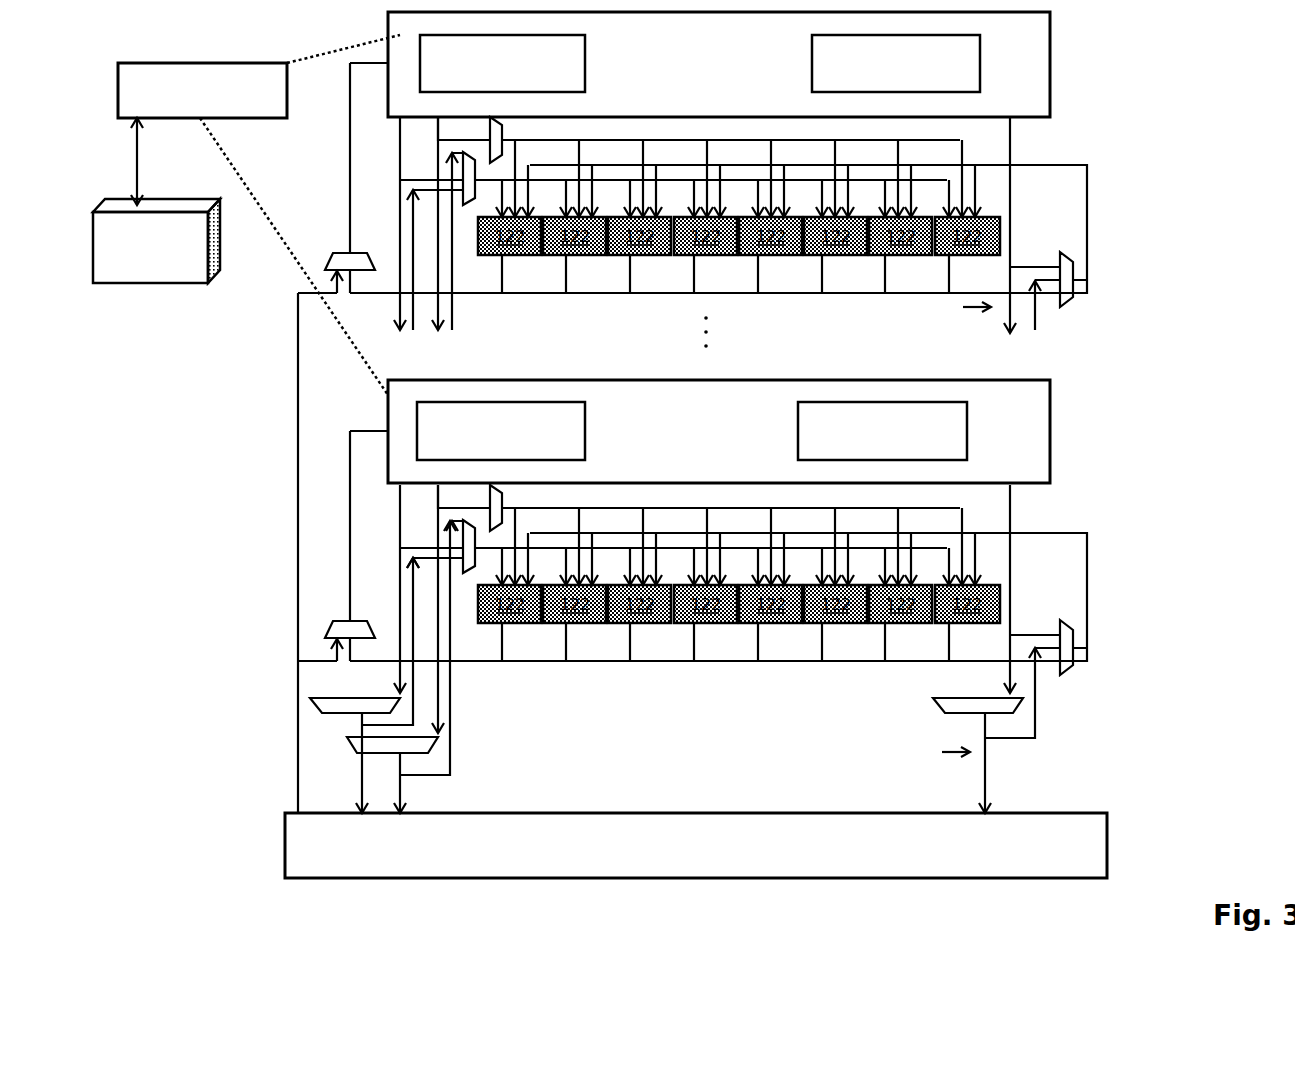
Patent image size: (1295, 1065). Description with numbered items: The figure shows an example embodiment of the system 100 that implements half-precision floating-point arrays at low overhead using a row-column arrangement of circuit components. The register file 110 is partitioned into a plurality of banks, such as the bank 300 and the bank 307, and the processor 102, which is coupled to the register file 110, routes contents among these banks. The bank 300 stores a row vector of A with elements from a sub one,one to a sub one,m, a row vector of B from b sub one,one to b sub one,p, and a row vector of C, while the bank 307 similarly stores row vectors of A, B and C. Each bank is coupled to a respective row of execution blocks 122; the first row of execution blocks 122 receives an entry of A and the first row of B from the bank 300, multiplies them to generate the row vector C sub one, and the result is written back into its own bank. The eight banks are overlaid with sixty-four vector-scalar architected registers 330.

The system 100 is at (1232, 652).
The register file 110 is at (182, 107).
The processor 102 is at (130, 266).
The bank 300 is at (690, 86).
The bank 307 is at (690, 454).
The execution block 122 is at (1006, 232).
The vector-scalar architected registers 330 is at (667, 867).